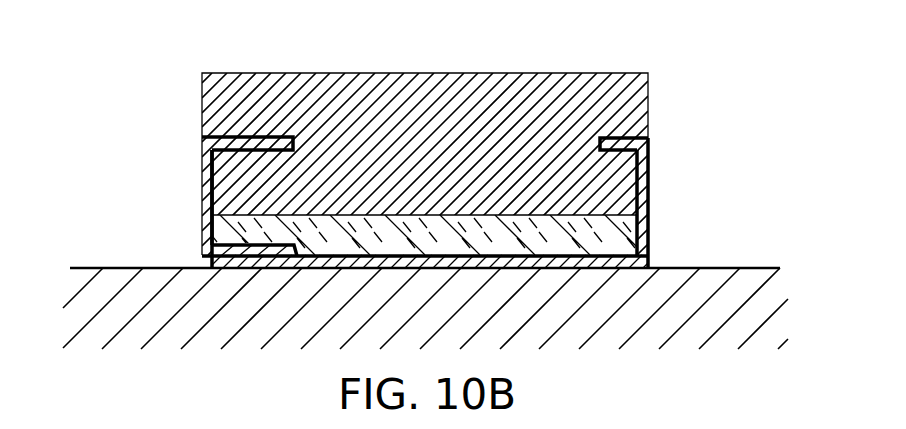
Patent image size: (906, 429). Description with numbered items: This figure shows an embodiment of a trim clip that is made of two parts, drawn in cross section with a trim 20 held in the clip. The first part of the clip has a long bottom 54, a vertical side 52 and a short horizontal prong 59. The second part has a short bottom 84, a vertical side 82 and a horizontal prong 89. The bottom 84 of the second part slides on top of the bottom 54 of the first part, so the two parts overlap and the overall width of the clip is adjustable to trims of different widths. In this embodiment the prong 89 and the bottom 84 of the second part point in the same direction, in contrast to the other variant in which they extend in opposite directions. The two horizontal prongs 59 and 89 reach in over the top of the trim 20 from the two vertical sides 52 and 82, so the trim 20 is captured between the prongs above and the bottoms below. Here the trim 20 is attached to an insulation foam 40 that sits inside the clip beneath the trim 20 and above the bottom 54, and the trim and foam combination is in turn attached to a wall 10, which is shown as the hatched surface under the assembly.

The wall 10 is at (749, 267).
The trim 20 is at (575, 87).
The insulation foam 40 is at (607, 236).
The vertical side 52 is at (648, 180).
The bottom 54 is at (592, 262).
The horizontal prong 59 is at (617, 140).
The vertical side 82 is at (203, 202).
The bottom 84 is at (246, 254).
The horizontal prong 89 is at (234, 146).